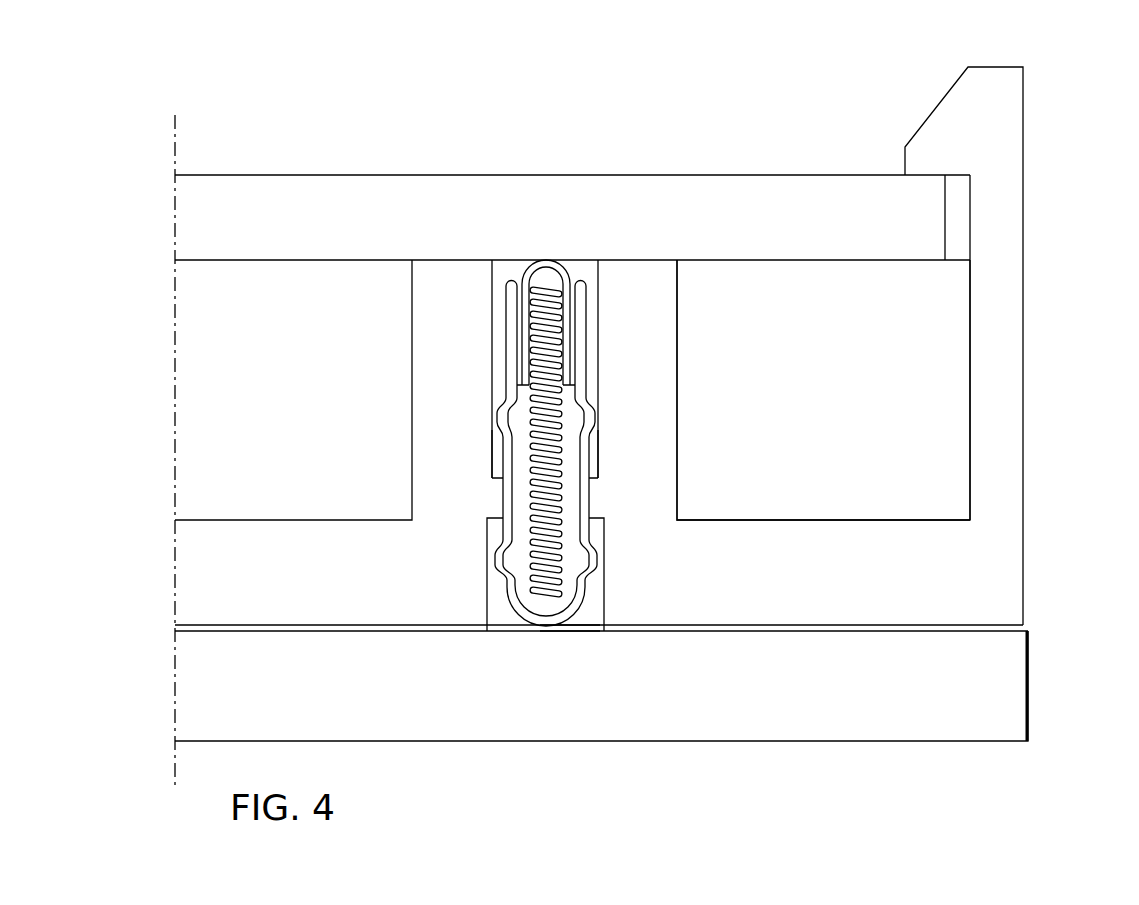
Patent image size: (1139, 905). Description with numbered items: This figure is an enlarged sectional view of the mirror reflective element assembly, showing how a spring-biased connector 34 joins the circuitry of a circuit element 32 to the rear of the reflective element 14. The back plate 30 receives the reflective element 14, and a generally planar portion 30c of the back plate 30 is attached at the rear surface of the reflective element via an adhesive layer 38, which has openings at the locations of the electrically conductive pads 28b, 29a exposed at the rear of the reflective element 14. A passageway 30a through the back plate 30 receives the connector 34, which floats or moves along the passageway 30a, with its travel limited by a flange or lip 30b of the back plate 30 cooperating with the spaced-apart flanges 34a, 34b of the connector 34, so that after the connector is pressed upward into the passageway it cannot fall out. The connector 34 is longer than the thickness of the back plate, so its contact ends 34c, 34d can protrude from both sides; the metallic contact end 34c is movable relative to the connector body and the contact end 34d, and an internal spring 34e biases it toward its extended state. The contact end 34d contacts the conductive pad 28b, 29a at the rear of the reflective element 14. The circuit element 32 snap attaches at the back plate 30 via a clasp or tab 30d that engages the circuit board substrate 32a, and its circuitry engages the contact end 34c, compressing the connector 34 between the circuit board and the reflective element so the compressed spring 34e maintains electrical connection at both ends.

The reflective element 14 is at (601, 737).
The electrically conductive pad 28b is at (565, 631).
The electrically conductive pad 29a is at (565, 631).
The back plate 30 is at (653, 416).
The passageway 30a is at (592, 270).
The flange 30b is at (593, 497).
The generally planar portion 30c is at (875, 562).
The clasp 30d is at (983, 120).
The circuit element 32 is at (662, 140).
The circuit board substrate 32a is at (806, 200).
The spring-biased connector 34 is at (478, 401).
The flange 34a is at (496, 416).
The flange 34b is at (496, 559).
The contact end 34c is at (546, 262).
The contact end 34d is at (546, 623).
The internal spring 34e is at (546, 492).
The adhesive layer 38 is at (268, 628).